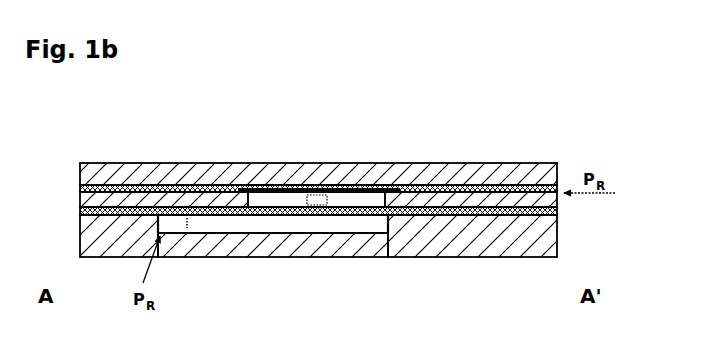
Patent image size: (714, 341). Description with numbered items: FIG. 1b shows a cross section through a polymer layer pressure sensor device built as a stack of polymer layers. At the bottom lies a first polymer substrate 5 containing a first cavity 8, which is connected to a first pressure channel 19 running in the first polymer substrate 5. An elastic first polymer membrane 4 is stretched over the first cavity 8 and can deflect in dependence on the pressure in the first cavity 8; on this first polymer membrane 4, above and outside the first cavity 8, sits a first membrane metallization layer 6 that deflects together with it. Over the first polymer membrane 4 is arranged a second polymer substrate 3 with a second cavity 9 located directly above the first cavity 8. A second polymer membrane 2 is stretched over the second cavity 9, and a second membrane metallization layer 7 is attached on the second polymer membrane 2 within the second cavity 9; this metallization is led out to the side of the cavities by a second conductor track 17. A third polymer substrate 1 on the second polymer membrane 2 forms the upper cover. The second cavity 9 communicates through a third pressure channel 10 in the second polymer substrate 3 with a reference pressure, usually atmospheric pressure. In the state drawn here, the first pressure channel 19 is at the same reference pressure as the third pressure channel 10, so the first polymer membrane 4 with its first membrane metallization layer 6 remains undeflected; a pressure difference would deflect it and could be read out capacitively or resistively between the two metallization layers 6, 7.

The third polymer substrate 1 is at (80, 172).
The second polymer membrane 2 is at (80, 188).
The second polymer substrate 3 is at (80, 203).
The first polymer membrane 4 is at (80, 215).
The first polymer substrate 5 is at (80, 243).
The first membrane metallization layer 6 is at (273, 215).
The second membrane metallization layer 7 is at (288, 189).
The first cavity 8 is at (300, 224).
The second cavity 9 is at (311, 196).
The third pressure channel 10 is at (430, 185).
The second conductor track 17 is at (323, 190).
The first pressure channel 19 is at (178, 222).